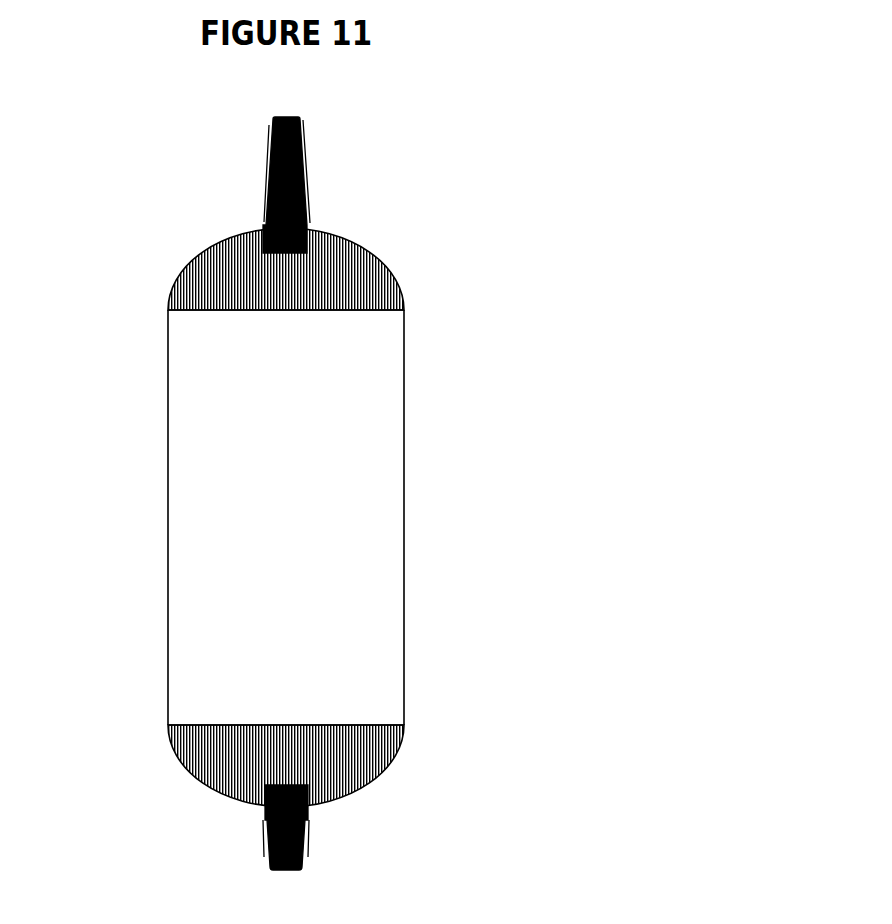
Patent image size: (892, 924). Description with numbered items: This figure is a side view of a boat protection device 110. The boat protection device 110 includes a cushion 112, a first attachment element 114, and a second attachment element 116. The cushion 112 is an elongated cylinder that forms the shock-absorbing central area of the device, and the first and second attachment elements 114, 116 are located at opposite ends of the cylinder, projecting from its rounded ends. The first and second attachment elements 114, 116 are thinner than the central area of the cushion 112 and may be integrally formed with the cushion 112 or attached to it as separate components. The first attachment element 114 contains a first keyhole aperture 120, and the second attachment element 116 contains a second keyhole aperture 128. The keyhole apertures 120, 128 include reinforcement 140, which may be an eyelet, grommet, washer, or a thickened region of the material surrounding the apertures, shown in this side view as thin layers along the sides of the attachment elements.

The boat protection device 110 is at (127, 207).
The cushion 112 is at (383, 521).
The first attachment element 114 is at (268, 128).
The second attachment element 116 is at (306, 820).
The first keyhole aperture 120 is at (312, 178).
The second keyhole aperture 128 is at (313, 842).
The reinforcement 140 is at (306, 143).